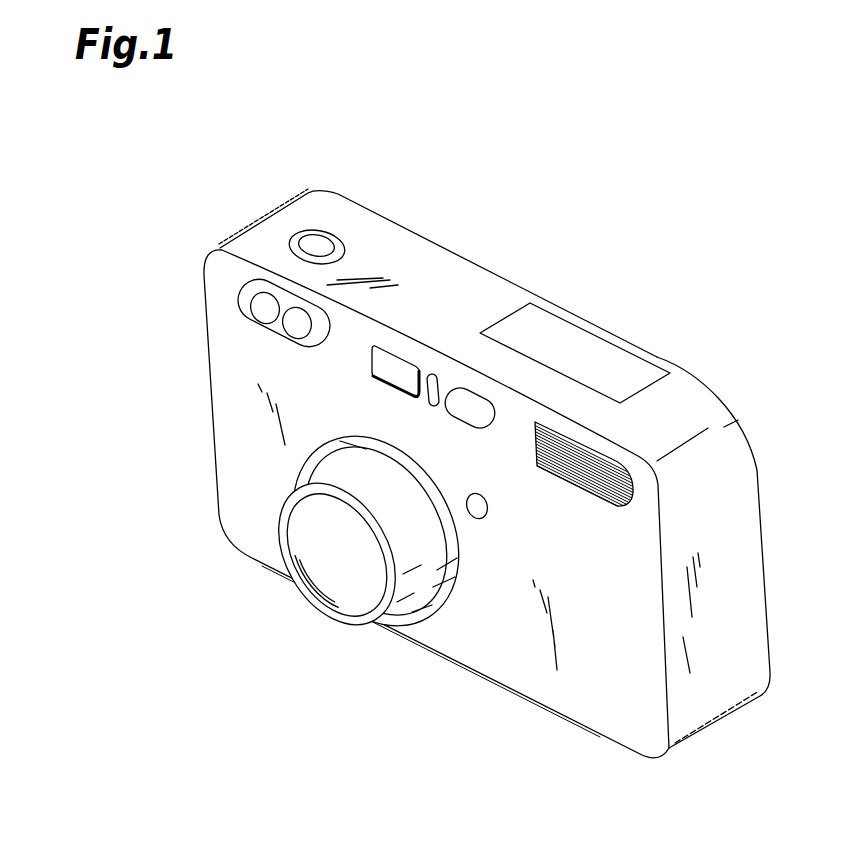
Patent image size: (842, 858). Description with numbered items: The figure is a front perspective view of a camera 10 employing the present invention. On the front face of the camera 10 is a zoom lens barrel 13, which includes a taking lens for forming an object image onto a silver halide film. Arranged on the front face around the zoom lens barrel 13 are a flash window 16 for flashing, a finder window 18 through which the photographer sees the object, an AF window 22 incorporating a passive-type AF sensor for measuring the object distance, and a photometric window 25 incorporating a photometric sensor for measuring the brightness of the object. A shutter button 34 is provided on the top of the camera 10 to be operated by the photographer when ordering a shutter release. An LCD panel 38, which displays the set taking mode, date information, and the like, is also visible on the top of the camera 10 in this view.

The camera 10 is at (546, 273).
The zoom lens barrel 13 is at (362, 593).
The flash window 16 is at (598, 462).
The finder window 18 is at (400, 370).
The AF window 22 is at (281, 328).
The photometric window 25 is at (478, 512).
The shutter button 34 is at (316, 240).
The LCD panel 38 is at (575, 352).